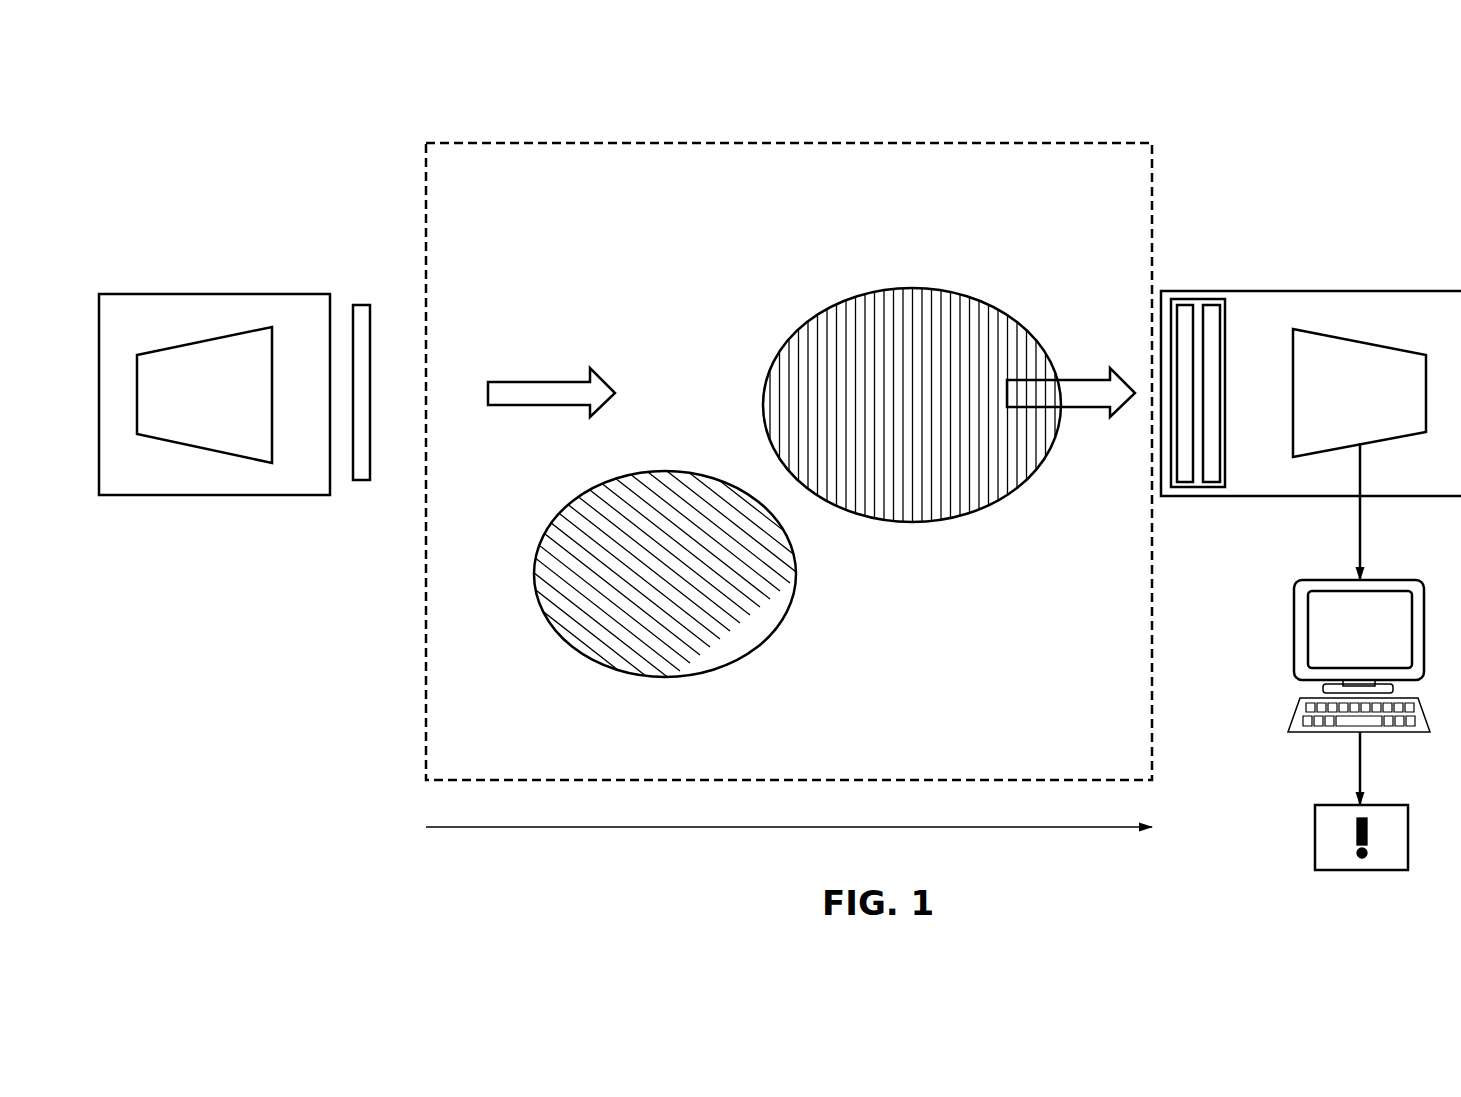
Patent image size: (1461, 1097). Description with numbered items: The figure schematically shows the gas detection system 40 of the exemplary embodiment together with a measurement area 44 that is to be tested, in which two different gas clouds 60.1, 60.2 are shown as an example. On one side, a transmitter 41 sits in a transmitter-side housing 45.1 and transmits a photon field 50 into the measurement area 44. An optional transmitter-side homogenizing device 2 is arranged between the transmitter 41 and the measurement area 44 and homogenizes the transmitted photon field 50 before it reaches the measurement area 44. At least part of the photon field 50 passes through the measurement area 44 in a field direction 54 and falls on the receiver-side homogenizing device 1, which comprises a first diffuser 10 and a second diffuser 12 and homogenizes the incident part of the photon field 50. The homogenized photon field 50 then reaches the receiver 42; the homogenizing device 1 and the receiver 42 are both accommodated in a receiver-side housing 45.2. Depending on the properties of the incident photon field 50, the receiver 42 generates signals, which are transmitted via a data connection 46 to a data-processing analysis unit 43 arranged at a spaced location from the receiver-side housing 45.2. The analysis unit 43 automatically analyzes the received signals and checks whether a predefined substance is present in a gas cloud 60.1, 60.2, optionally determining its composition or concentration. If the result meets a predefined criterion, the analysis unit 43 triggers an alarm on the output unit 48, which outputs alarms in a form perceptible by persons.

The receiver-side homogenizing device 1 is at (1198, 493).
The transmitter-side homogenizing device 2 is at (362, 330).
The first diffuser 10 is at (1185, 313).
The second diffuser 12 is at (1215, 320).
The detection system 40 is at (265, 247).
The transmitter 41 is at (203, 450).
The receiver 42 is at (1348, 338).
The analysis unit 43 is at (1293, 618).
The measurement area 44 is at (423, 680).
The transmitter-side housing 45.1 is at (180, 290).
The receiver-side housing 45.2 is at (1433, 287).
The data connection 46 is at (1353, 510).
The output unit 48 is at (1310, 830).
The photon field 50 is at (587, 400).
The field direction 54 is at (475, 828).
The first gas cloud 60.1 is at (635, 643).
The second gas cloud 60.2 is at (832, 343).